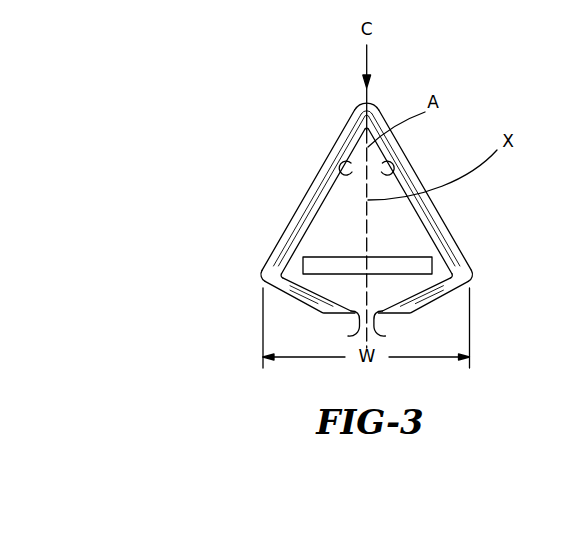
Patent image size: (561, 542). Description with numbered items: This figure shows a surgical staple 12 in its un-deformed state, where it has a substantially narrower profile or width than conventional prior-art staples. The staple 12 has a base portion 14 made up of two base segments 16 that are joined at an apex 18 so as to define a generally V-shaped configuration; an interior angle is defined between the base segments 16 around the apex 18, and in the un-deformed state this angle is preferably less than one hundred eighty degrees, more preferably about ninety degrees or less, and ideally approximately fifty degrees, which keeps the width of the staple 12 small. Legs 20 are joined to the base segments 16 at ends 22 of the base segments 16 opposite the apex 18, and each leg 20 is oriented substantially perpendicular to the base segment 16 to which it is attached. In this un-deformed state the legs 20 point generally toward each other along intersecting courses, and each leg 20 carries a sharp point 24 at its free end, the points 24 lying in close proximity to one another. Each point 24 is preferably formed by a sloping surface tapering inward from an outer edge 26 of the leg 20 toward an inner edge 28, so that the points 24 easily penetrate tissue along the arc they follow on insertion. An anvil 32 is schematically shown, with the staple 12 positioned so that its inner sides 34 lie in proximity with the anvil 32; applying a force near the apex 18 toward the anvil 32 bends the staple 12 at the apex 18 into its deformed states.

The surgical staple 12 is at (452, 197).
The base portion 14 is at (393, 103).
The base segments 16 is at (313, 181).
The apex 18 is at (362, 117).
The legs 20 is at (281, 291).
The ends of base segments 22 is at (275, 268).
The sharp point 24 is at (370, 330).
The outer edge 26 is at (303, 304).
The inner edge 28 is at (420, 290).
The anvil 32 is at (335, 262).
The inner sides 34 is at (344, 162).